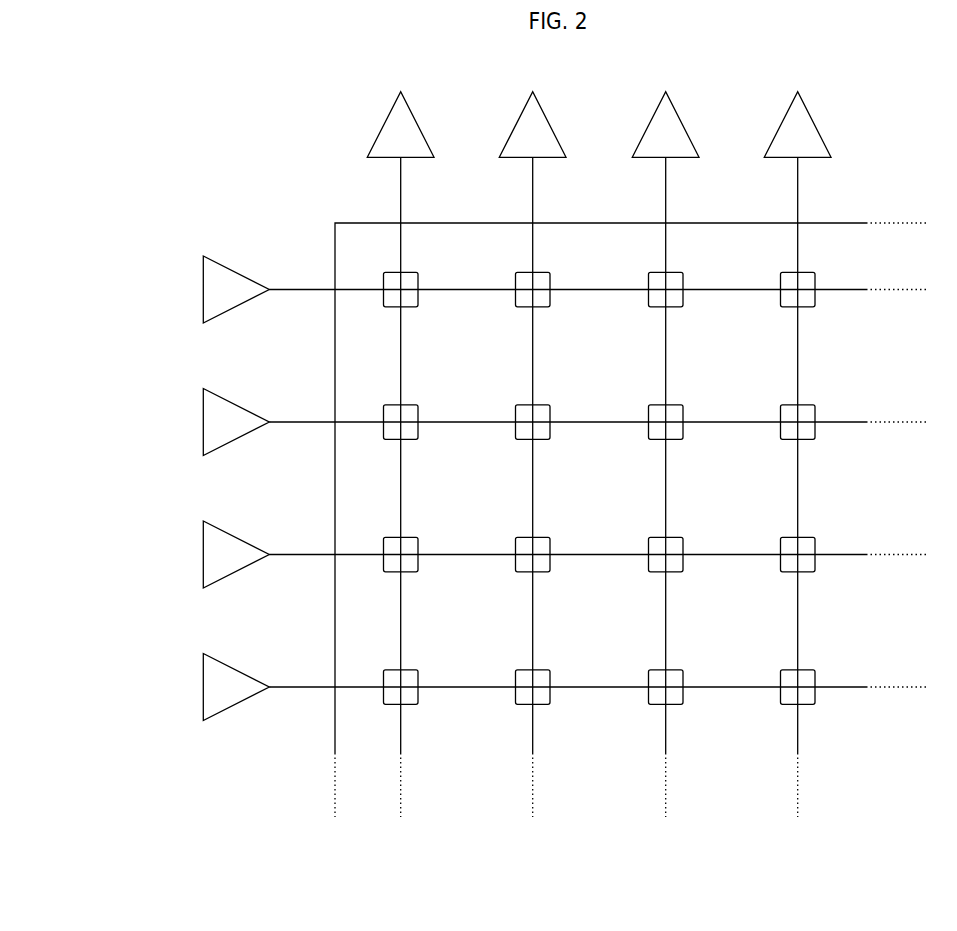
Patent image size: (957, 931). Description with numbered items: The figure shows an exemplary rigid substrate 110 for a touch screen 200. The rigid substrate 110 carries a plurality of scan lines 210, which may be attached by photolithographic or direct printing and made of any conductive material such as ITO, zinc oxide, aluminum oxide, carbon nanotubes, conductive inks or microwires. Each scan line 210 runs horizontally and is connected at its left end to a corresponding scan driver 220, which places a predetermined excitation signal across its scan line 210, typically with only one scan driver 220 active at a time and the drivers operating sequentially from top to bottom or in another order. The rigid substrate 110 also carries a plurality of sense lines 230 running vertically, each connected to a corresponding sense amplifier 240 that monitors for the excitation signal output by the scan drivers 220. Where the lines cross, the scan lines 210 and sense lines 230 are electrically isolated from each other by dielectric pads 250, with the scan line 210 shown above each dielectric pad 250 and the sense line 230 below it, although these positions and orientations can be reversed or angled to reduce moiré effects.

The touch screen 200 is at (516, 422).
The rigid substrate 110 is at (352, 222).
The scan lines 210 is at (457, 423).
The scan driver 220 is at (252, 429).
The sense lines 230 is at (535, 263).
The sense amplifier 240 is at (538, 100).
The dielectric pads 250 is at (807, 272).